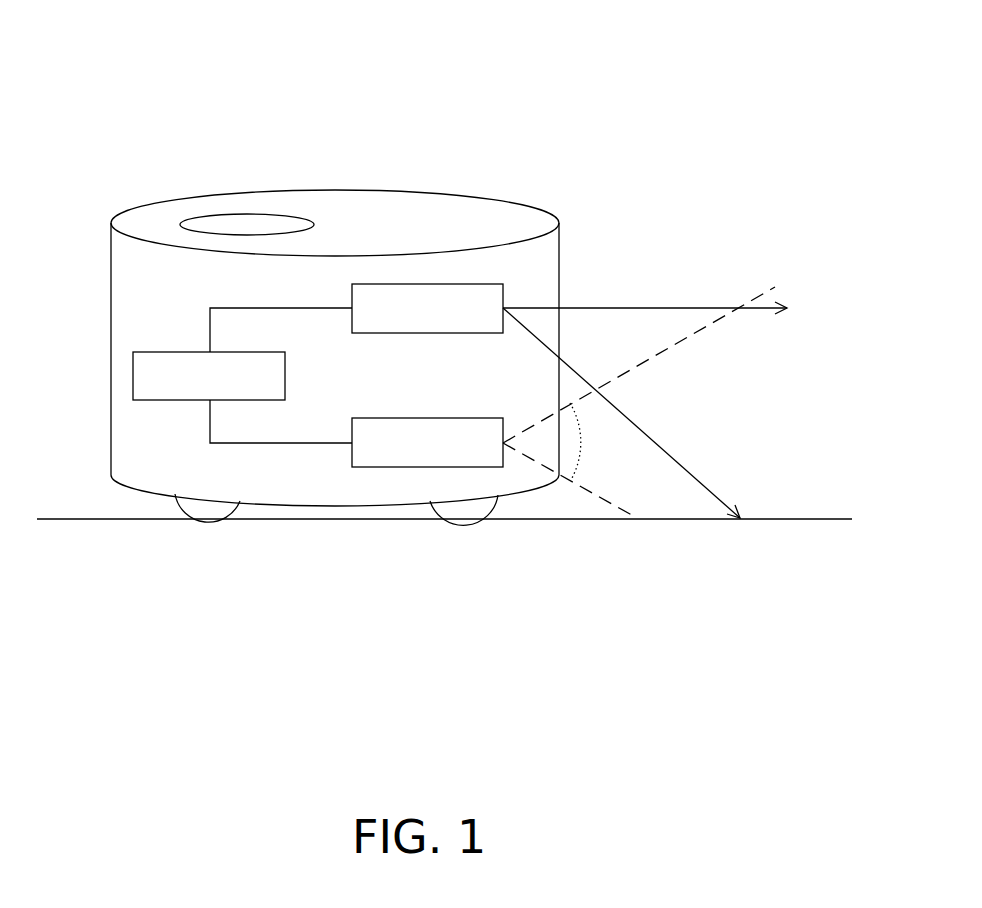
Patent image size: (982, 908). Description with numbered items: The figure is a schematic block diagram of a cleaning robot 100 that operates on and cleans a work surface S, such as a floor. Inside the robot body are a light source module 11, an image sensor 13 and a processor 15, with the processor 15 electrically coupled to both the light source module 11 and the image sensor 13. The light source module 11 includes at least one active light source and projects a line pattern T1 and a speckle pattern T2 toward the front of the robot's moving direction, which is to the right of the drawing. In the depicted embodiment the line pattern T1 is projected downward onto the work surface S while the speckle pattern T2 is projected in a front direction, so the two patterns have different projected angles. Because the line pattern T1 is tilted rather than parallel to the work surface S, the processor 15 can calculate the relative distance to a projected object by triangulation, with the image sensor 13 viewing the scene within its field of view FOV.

The cleaning robot 100 is at (102, 78).
The light source module 11 is at (483, 284).
The image sensor 13 is at (398, 467).
The processor 15 is at (133, 369).
The work surface S is at (56, 518).
The line pattern T1 is at (635, 413).
The speckle pattern T2 is at (651, 324).
The field of view FOV is at (639, 402).